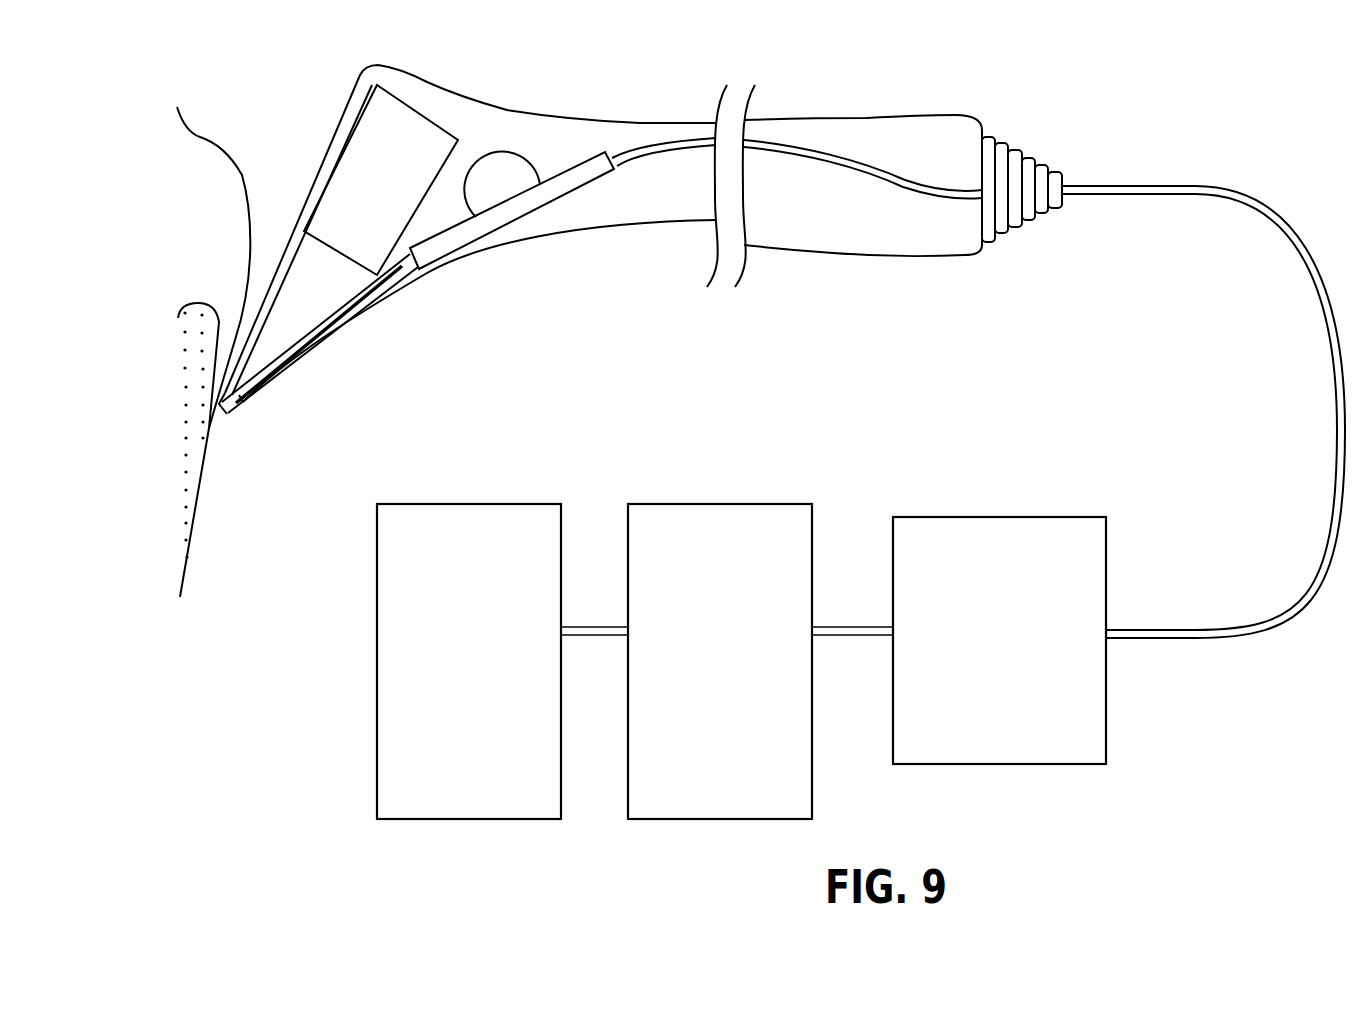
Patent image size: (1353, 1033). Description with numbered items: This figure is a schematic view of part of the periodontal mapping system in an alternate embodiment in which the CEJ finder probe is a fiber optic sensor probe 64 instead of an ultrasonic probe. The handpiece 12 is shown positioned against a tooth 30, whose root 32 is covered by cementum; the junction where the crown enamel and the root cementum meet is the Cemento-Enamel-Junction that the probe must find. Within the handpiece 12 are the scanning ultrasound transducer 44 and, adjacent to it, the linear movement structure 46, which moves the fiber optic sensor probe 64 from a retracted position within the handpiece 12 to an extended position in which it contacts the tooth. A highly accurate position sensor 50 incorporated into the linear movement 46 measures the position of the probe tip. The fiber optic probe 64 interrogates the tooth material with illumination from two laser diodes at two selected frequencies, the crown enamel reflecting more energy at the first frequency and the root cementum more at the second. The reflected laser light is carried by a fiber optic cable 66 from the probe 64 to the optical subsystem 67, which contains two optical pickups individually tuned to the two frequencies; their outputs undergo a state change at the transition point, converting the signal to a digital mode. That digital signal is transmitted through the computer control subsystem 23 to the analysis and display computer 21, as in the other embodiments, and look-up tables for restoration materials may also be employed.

The handpiece 12 is at (867, 130).
The analysis and display computer 21 is at (462, 503).
The computer control subsystem 23 is at (698, 503).
The tooth 30 is at (193, 143).
The tooth root 32 is at (192, 493).
The scanning ultrasound transducer 44 is at (405, 115).
The linear movement structure 46 is at (463, 238).
The position sensor 50 is at (512, 165).
The fiber optic sensor probe 64 is at (310, 337).
The fiber optic cable 66 is at (1220, 187).
The optical subsystem 67 is at (985, 516).